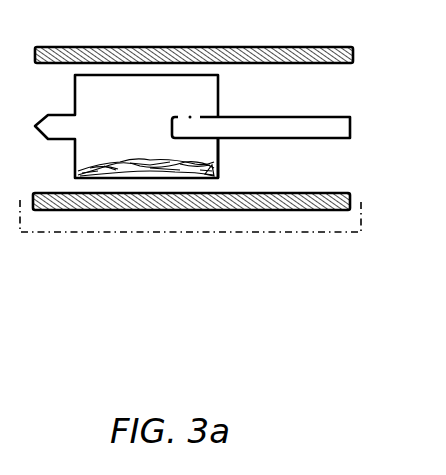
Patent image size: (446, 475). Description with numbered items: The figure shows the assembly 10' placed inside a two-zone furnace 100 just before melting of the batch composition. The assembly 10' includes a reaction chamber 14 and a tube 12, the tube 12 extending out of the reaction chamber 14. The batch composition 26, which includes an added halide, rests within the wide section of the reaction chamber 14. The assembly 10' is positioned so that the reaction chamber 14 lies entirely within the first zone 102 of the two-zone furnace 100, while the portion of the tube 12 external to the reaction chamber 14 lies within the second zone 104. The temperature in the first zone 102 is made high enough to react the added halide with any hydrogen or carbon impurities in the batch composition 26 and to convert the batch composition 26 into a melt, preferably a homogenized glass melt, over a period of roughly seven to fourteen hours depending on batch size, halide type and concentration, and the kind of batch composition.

The reaction chamber 14 is at (122, 75).
The tube 12 is at (288, 118).
The batch composition 26 is at (150, 170).
The assembly 10' is at (268, 226).
The first zone 102 is at (115, 212).
The second zone 104 is at (328, 212).
The two-zone furnace 100 is at (192, 233).